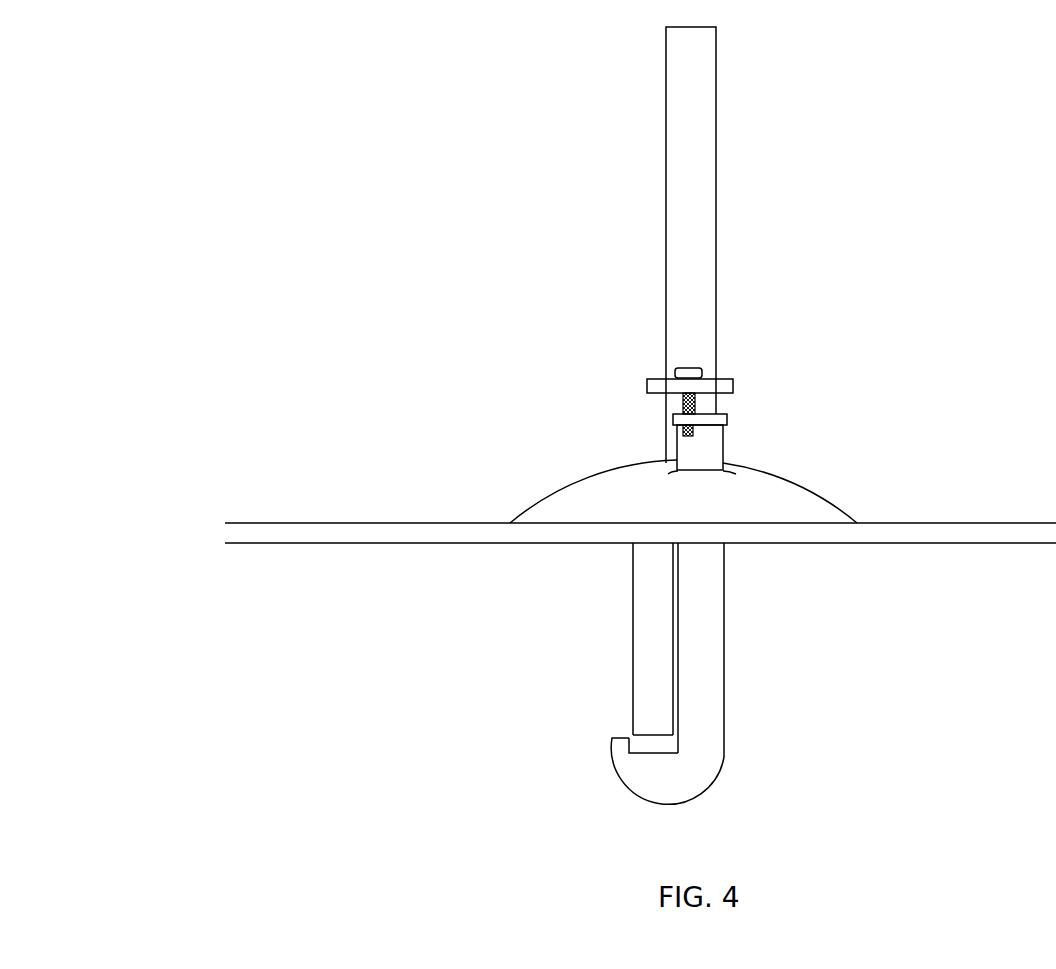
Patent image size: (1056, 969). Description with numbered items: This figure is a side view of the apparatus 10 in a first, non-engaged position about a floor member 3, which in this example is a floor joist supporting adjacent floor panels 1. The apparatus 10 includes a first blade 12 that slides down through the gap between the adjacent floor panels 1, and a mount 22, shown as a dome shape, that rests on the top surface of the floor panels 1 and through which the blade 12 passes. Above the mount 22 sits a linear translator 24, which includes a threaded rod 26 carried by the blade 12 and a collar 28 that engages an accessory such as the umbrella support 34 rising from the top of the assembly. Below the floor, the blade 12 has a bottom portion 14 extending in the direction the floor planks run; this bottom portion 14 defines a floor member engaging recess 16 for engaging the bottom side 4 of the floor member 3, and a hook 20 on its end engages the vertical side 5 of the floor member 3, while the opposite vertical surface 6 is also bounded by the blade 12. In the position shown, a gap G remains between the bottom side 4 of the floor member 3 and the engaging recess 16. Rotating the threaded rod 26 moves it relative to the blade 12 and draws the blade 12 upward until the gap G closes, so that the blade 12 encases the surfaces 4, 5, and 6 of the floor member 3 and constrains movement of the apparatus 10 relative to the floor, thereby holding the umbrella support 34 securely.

The apparatus 10 is at (497, 103).
The umbrella support 34 is at (666, 197).
The linear translator 24 is at (686, 364).
The collar 28 is at (738, 386).
The threaded rod 26 is at (681, 403).
The mount 22 is at (538, 500).
The floor panels 1 is at (392, 523).
The floor member 3 is at (631, 573).
The vertical side 5 is at (631, 715).
The first blade 12 is at (750, 614).
The vertical surface 6 is at (676, 665).
The hook 20 is at (606, 761).
The bottom side 4 is at (653, 729).
The gap G is at (657, 742).
The floor member engaging recess 16 is at (674, 757).
The bottom portion 14 is at (666, 822).